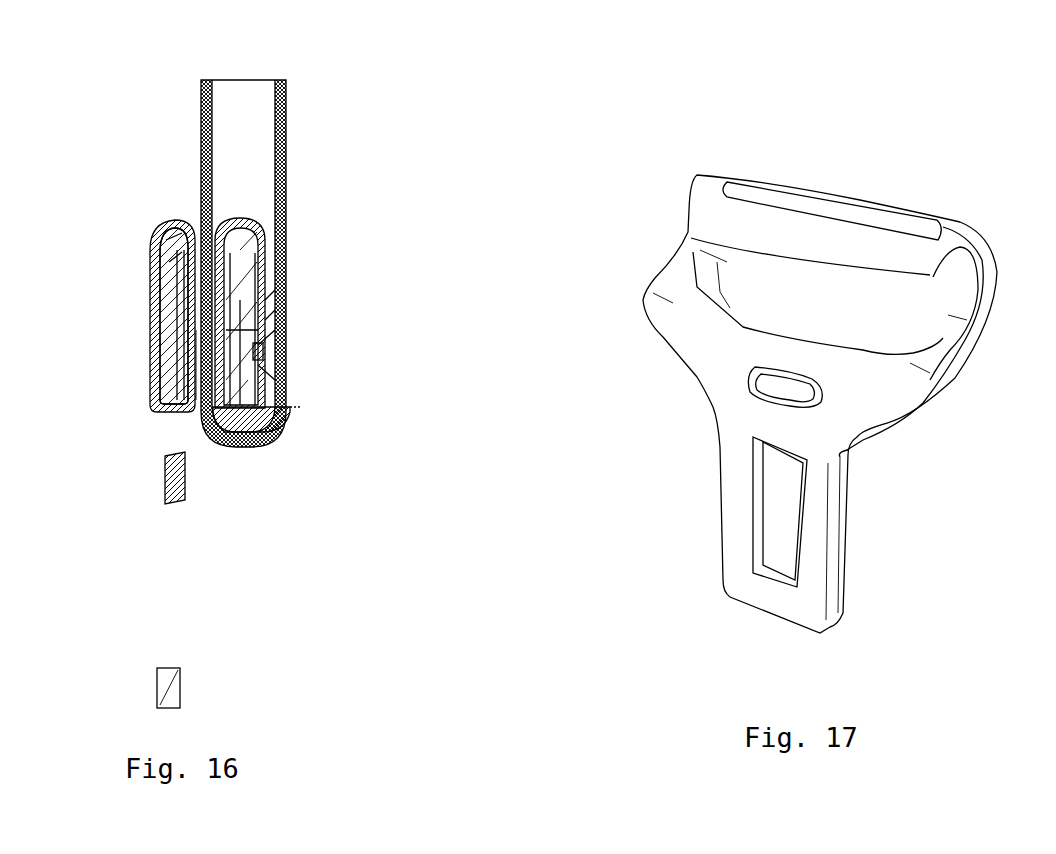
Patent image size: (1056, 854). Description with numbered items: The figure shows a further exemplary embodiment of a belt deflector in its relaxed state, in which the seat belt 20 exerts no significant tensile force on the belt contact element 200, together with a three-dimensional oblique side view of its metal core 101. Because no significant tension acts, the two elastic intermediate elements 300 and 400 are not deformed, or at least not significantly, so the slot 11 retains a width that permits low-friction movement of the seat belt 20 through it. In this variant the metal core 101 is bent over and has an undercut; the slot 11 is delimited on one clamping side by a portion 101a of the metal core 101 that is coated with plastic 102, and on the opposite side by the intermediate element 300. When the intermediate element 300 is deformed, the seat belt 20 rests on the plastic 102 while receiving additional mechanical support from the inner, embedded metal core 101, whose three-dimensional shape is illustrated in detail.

In FIG. 16, the slot 11 is at (193, 400).
In FIG. 16, the seat belt 20 is at (277, 282).
In FIG. 16, the metal core 101 is at (173, 493).
In FIG. 17, the metal core 101 is at (695, 360).
In FIG. 16, the portion of the metal core 101a is at (170, 320).
In FIG. 16, the plastic 102 is at (157, 357).
In FIG. 16, the belt contact element 200 is at (258, 440).
In FIG. 16, the intermediate element 300 is at (219, 378).
In FIG. 16, the intermediate element 400 is at (273, 380).